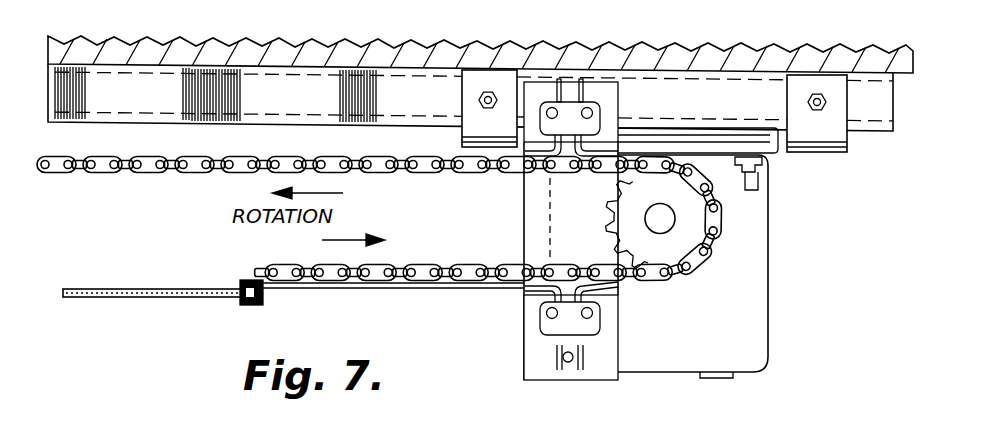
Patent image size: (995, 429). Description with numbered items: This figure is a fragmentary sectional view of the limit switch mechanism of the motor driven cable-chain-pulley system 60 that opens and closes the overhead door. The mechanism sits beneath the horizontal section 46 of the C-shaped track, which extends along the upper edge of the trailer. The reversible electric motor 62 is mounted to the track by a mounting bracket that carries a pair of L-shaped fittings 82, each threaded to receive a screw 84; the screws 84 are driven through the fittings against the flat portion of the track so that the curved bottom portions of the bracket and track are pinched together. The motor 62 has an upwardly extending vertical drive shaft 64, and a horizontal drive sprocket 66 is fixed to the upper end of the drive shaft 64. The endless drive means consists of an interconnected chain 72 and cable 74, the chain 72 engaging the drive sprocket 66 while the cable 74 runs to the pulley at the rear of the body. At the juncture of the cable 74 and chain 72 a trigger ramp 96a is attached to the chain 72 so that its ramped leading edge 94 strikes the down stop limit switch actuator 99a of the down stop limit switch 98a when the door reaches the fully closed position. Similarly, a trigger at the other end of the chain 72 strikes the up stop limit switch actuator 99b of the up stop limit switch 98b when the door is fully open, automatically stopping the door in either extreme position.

The horizontal section 46 is at (316, 108).
The L-shaped fitting 82 is at (473, 125).
The screw 84 is at (478, 100).
The up stop limit switch 98b is at (592, 122).
The up stop limit switch actuator 99b is at (620, 142).
The reversible electric motor 62 is at (742, 289).
The down stop limit switch 98a is at (590, 316).
The down stop limit switch actuator 99a is at (617, 295).
The drive sprocket 66 is at (690, 243).
The drive shaft 64 is at (675, 218).
The chain 72 is at (122, 173).
The trigger ramp 96a is at (446, 284).
The ramped leading edge 94 is at (514, 291).
The cable 74 is at (146, 288).
The cable-chain-pulley system 60 is at (400, 303).